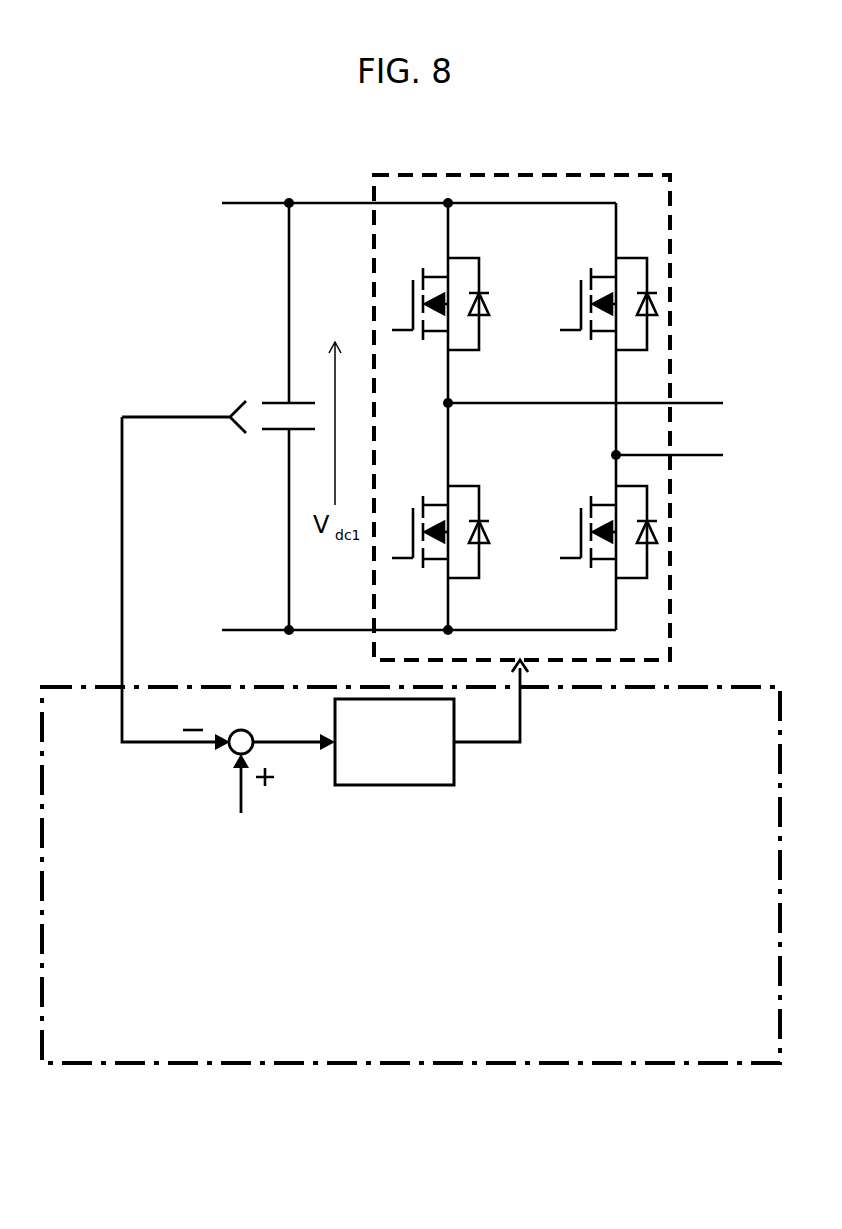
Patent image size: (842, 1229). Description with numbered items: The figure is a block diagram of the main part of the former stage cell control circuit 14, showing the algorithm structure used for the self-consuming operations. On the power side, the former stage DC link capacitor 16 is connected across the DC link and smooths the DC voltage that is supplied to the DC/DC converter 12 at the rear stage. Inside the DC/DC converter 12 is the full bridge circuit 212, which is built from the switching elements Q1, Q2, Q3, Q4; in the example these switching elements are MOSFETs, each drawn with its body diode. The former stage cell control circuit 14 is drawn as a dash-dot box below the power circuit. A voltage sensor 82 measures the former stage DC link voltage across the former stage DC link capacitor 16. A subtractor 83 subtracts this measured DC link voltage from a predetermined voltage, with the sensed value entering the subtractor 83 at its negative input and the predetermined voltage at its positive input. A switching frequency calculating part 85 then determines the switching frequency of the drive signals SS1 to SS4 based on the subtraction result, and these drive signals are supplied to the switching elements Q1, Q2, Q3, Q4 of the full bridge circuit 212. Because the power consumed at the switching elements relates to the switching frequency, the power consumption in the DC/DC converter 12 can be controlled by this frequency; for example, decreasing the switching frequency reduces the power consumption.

The DC/DC converter 12 is at (573, 397).
The full bridge circuit 212 is at (573, 397).
The former stage cell control circuit 14 is at (735, 685).
The former stage DC link capacitor 16 is at (276, 403).
The voltage sensor 82 is at (240, 431).
The subtractor 83 is at (232, 752).
The switching frequency calculating part 85 is at (416, 787).
The switching element Q1 is at (431, 277).
The switching element Q2 is at (431, 505).
The switching element Q3 is at (599, 277).
The switching element Q4 is at (599, 505).